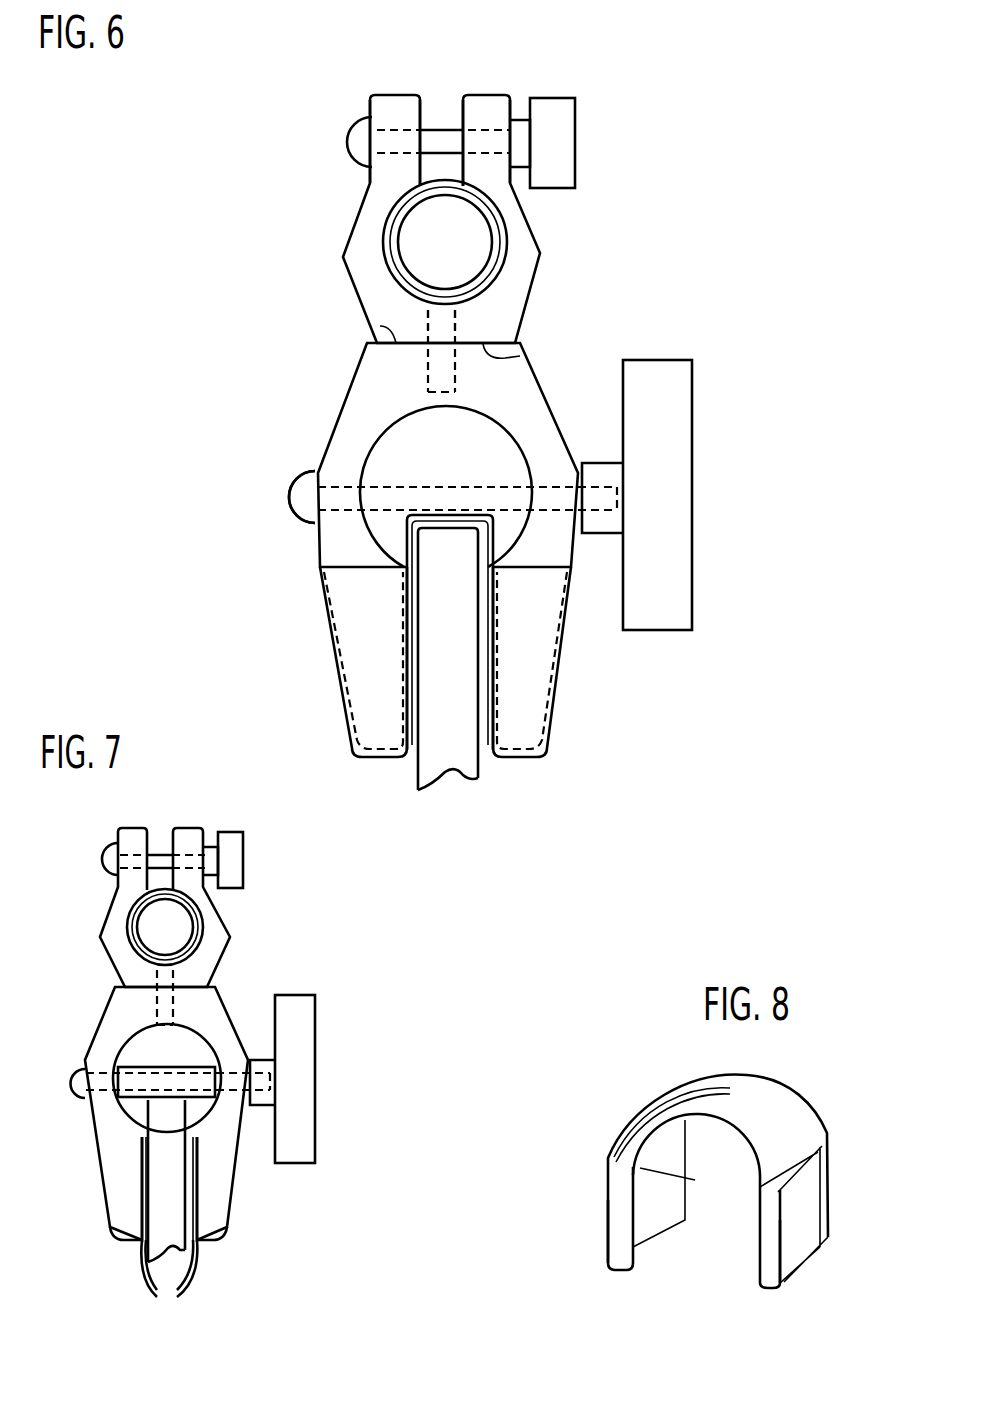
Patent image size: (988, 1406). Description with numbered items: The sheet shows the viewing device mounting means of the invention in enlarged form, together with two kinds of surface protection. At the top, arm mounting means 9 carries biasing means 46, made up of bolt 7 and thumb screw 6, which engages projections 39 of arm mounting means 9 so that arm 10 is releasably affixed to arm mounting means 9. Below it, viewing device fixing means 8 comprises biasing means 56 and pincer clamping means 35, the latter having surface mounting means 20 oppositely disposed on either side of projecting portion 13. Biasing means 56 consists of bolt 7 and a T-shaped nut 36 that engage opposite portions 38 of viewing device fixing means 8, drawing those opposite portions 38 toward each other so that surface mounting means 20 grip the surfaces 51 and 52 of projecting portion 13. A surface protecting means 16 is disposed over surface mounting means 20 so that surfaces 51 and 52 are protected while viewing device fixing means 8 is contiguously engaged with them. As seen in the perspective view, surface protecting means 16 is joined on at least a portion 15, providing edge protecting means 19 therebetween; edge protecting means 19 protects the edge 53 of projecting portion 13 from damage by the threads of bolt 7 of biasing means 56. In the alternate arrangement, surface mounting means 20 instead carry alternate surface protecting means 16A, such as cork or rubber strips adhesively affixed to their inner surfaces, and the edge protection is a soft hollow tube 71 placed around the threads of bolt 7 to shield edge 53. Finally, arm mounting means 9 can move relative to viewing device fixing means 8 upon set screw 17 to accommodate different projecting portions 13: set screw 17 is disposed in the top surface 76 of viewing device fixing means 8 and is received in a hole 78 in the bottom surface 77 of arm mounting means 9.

In FIG. 6, the thumb screw 6 is at (567, 118).
In FIG. 7, the thumb screw 6 is at (235, 850).
In FIG. 6, the bolt 7 is at (352, 137).
In FIG. 7, the bolt 7 is at (106, 858).
In FIG. 6, the viewing device fixing means 8 is at (365, 397).
In FIG. 7, the viewing device fixing means 8 is at (115, 1017).
In FIG. 6, the arm mounting means 9 is at (520, 253).
In FIG. 7, the arm mounting means 9 is at (210, 913).
In FIG. 6, the arm 10 is at (387, 238).
In FIG. 7, the arm 10 is at (133, 913).
In FIG. 6, the projecting portion 13 is at (472, 758).
In FIG. 7, the projecting portion 13 is at (178, 1200).
In FIG. 8, the joined portion 15 is at (753, 1180).
In FIG. 6, the surface protecting means 16 is at (520, 708).
In FIG. 8, the surface protecting means 16 is at (645, 1228).
In FIG. 7, the alternate surface protecting means 16A is at (174, 1291).
In FIG. 6, the set screw 17 is at (440, 330).
In FIG. 7, the set screw 17 is at (167, 977).
In FIG. 6, the edge protecting means 19 is at (447, 517).
In FIG. 7, the edge protecting means 19 is at (140, 1097).
In FIG. 8, the edge protecting means 19 is at (777, 1107).
In FIG. 6, the surface mounting means 20 is at (332, 538).
In FIG. 7, the surface mounting means 20 is at (123, 1217).
In FIG. 6, the pincer clamping means 35 is at (352, 760).
In FIG. 7, the pincer clamping means 35 is at (123, 1267).
In FIG. 6, the T-shaped nut 36 is at (676, 406).
In FIG. 7, the T-shaped nut 36 is at (300, 1028).
In FIG. 6, the opposite portions 38 is at (318, 470).
In FIG. 7, the opposite portions 38 is at (262, 1082).
In FIG. 6, the projections 39 is at (477, 93).
In FIG. 6, the biasing means 46 is at (522, 118).
In FIG. 7, the biasing means 46 is at (210, 840).
In FIG. 6, the surface of projecting portion 51 is at (414, 779).
In FIG. 6, the surface of projecting portion 52 is at (482, 780).
In FIG. 6, the edge 53 is at (445, 537).
In FIG. 7, the edge 53 is at (167, 1078).
In FIG. 6, the biasing means 56 is at (710, 505).
In FIG. 7, the biasing means 56 is at (325, 1080).
In FIG. 7, the soft hollow tube 71 is at (182, 1072).
In FIG. 6, the top surface 76 is at (385, 330).
In FIG. 6, the bottom surface 77 is at (485, 357).
In FIG. 6, the hole 78 is at (425, 323).